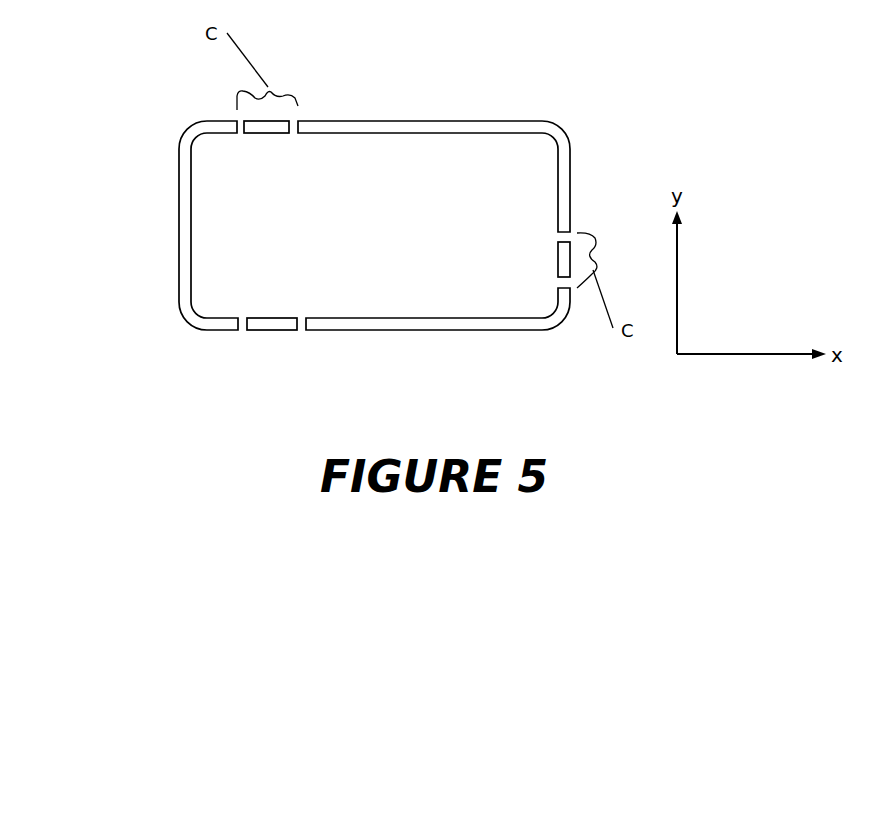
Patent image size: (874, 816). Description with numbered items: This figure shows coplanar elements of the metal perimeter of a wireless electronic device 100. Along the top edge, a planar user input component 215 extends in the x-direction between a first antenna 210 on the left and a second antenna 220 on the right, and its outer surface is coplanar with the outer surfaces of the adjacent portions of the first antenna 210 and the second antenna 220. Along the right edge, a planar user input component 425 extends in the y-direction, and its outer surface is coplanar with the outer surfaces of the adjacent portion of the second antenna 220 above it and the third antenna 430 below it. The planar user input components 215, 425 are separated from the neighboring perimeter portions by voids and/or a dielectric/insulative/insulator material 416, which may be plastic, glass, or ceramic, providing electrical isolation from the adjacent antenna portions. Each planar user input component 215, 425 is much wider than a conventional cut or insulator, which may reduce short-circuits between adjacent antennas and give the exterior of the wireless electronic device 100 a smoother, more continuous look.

The wireless electronic device 100 is at (113, 236).
The first antenna 210 is at (207, 128).
The planar user input component 215 is at (255, 128).
The second antenna 220 is at (350, 127).
The dielectric/insulative/insulator material 416 is at (240, 132).
The planar user input component 425 is at (561, 265).
The third antenna 430 is at (430, 323).